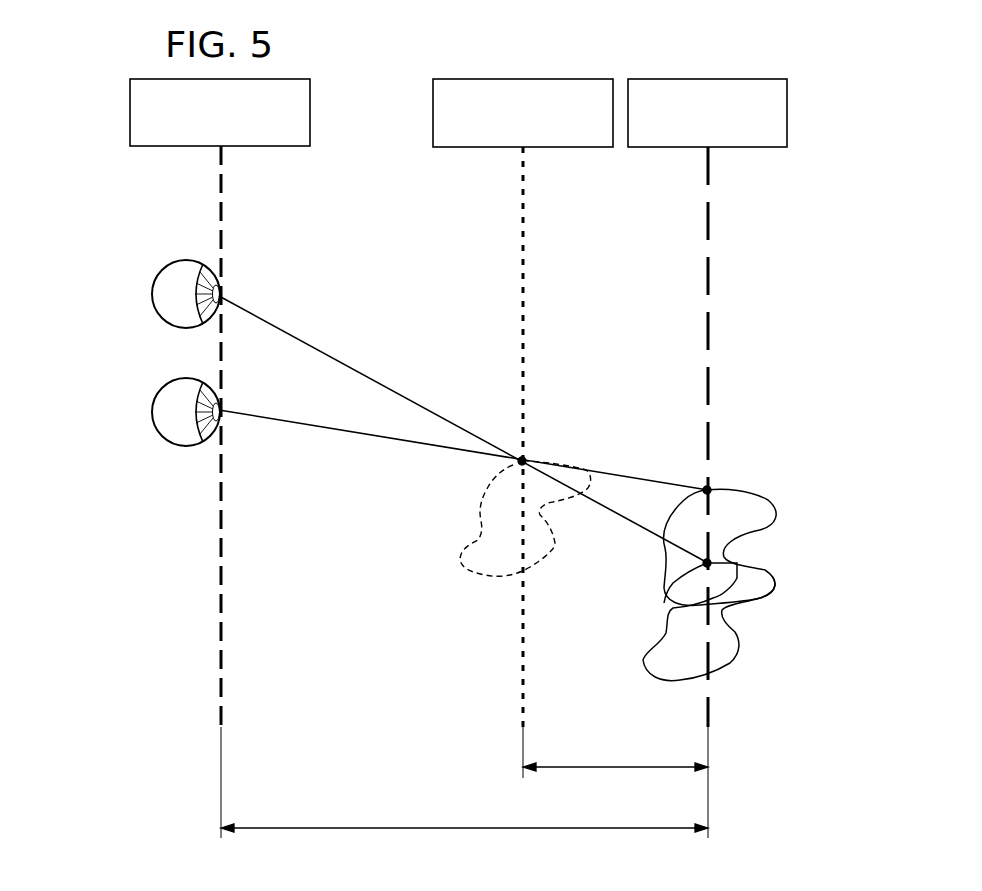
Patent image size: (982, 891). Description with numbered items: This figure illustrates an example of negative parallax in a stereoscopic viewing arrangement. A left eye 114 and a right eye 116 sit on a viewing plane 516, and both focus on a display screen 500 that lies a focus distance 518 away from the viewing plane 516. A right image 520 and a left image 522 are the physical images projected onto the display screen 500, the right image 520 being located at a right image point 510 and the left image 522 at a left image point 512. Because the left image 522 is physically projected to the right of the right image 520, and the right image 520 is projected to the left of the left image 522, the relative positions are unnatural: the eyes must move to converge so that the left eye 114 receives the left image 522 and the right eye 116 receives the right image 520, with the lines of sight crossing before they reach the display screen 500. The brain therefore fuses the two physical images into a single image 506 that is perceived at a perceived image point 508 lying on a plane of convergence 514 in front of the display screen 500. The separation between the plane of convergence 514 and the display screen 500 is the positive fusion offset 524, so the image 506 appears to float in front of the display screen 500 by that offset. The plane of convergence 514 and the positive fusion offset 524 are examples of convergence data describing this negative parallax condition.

The display screen 500 is at (789, 112).
The plane of convergence 514 is at (534, 78).
The viewing plane 516 is at (128, 112).
The left eye 114 is at (190, 259).
The right eye 116 is at (187, 447).
The image 506 is at (472, 576).
The perceived image point 508 is at (533, 451).
The right image point 510 is at (715, 482).
The left image point 512 is at (742, 567).
The focus distance 518 is at (463, 830).
The right image 520 is at (797, 490).
The left image 522 is at (727, 667).
The positive fusion offset 524 is at (613, 770).